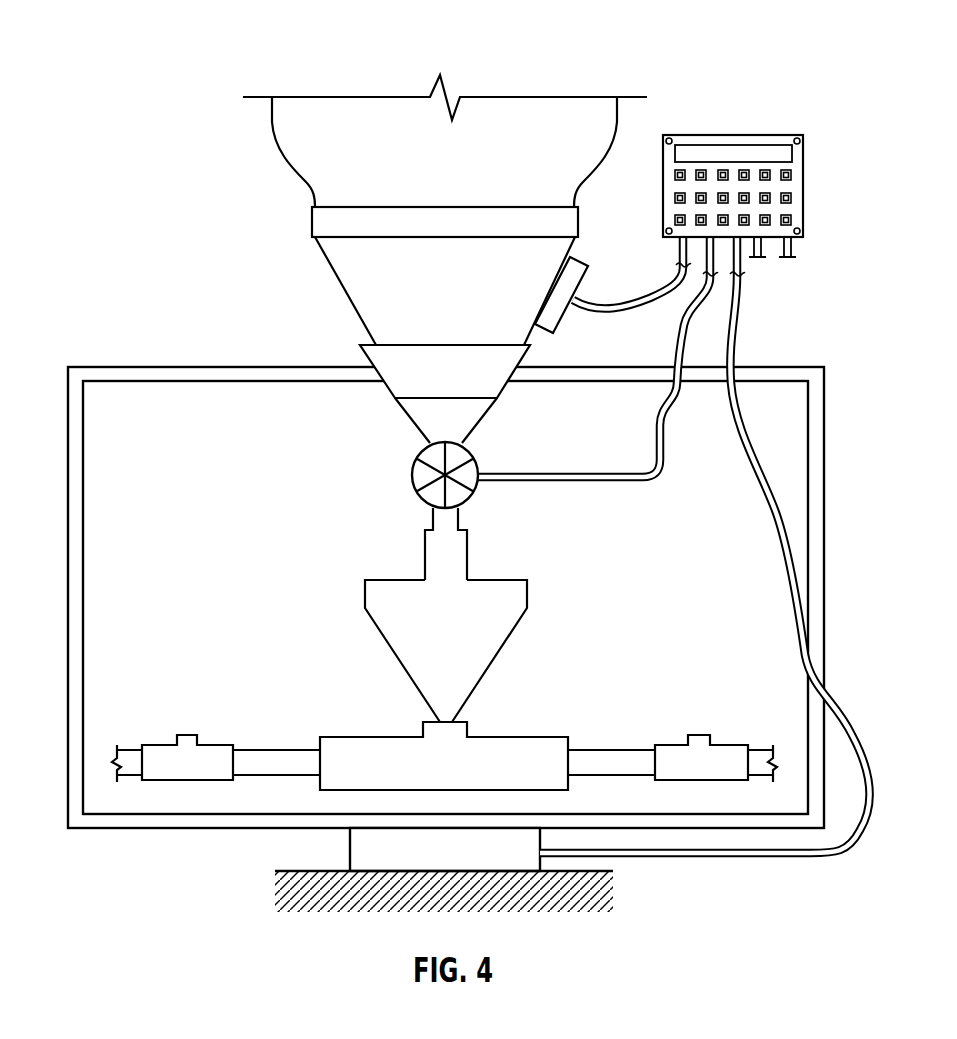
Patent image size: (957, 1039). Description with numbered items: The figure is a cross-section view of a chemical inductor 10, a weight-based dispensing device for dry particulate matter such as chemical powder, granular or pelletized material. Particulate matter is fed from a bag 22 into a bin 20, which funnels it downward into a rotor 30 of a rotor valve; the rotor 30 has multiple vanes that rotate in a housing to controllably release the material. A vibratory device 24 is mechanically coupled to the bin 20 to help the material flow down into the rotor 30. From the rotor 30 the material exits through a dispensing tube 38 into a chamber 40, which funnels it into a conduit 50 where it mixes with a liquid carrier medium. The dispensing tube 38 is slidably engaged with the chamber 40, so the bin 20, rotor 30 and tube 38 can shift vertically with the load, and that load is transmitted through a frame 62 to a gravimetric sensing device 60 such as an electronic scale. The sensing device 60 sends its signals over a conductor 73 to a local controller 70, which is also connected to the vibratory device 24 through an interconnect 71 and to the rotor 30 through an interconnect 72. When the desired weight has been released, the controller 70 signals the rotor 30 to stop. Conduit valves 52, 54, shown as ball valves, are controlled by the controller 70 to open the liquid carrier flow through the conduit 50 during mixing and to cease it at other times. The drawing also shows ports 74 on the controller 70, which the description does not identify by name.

The chemical inductor 10 is at (98, 58).
The bin 20 is at (348, 272).
The bag 22 is at (287, 120).
The vibratory device 24 is at (557, 322).
The rotor 30 is at (404, 464).
The dispensing tube 38 is at (437, 523).
The chamber 40 is at (375, 652).
The conduit 50 is at (364, 722).
The conduit valve 52 is at (160, 745).
The conduit valve 54 is at (729, 745).
The sensing device 60 is at (335, 852).
The frame 62 is at (132, 372).
The local controller 70 is at (812, 184).
The interconnect 71 is at (668, 280).
The interconnect 72 is at (601, 470).
The conductor 73 is at (767, 545).
The connector ports 74 is at (767, 256).